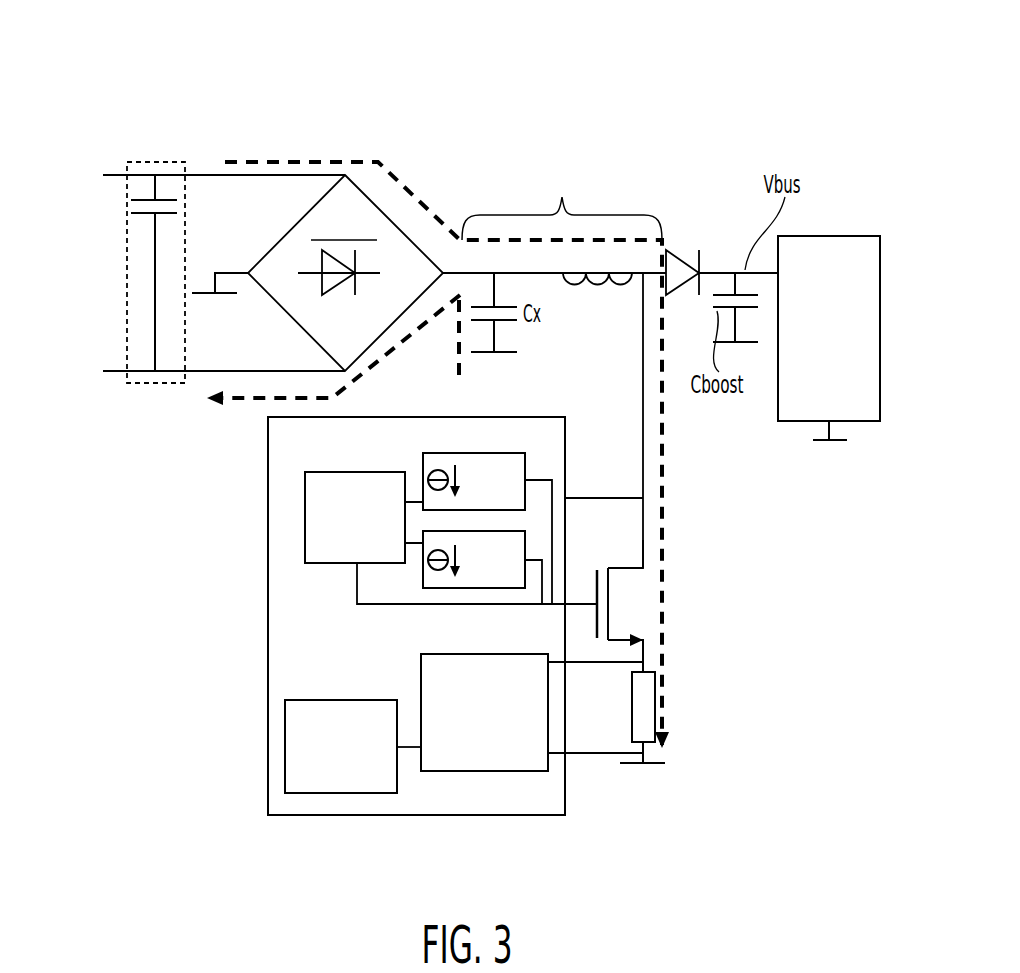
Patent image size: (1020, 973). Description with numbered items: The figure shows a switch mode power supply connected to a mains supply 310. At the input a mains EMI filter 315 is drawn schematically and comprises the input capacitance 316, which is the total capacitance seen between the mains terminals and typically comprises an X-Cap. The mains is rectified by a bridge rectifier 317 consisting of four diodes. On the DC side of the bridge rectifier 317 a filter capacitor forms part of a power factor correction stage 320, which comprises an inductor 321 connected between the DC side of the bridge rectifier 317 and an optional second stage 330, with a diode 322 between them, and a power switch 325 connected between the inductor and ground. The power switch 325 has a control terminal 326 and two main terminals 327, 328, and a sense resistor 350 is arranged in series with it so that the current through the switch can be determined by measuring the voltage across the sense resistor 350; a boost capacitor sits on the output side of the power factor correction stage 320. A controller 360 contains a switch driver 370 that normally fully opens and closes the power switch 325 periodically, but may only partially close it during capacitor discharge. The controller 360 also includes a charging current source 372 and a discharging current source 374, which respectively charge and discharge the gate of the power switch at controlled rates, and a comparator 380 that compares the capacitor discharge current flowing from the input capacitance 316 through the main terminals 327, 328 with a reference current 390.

The mains supply 310 is at (72, 307).
The mains EMI filter 315 is at (180, 385).
The input capacitance Cin 316 is at (205, 271).
The bridge rectifier 317 is at (325, 208).
The power factor correction stage 320 is at (562, 176).
The inductor Lpfc 321 is at (598, 285).
The diode Dpfc 322 is at (675, 257).
The power switch 325 is at (620, 603).
The control terminal 326 is at (596, 603).
The main terminal 327 is at (641, 567).
The main terminal 328 is at (620, 641).
The optional second stage 330 is at (812, 378).
The sense resistor 350 is at (645, 705).
The controller 360 is at (329, 447).
The switch driver 370 is at (337, 554).
The charging current source 372 is at (508, 462).
The discharging current source 374 is at (473, 582).
The comparator 380 is at (468, 742).
The reference current 390 is at (324, 782).